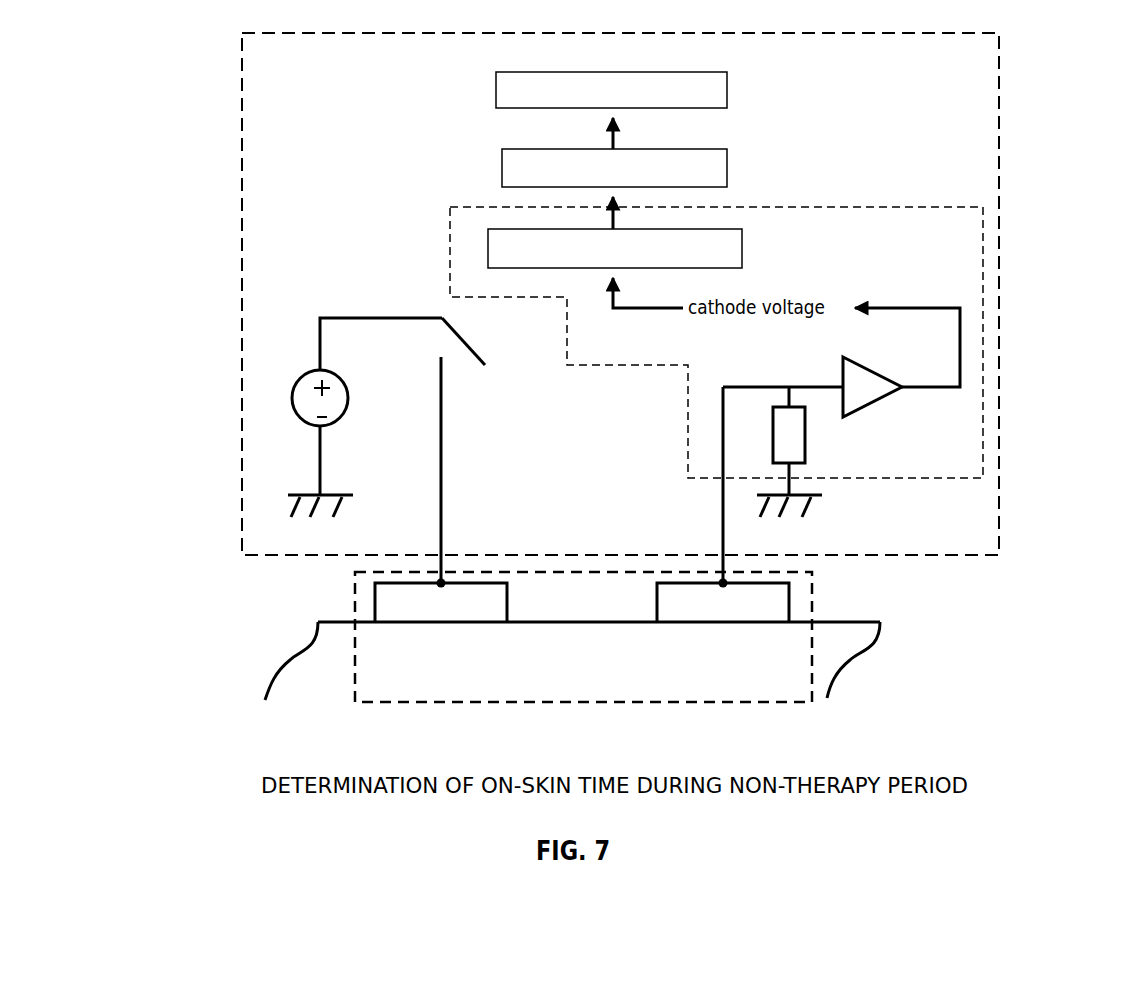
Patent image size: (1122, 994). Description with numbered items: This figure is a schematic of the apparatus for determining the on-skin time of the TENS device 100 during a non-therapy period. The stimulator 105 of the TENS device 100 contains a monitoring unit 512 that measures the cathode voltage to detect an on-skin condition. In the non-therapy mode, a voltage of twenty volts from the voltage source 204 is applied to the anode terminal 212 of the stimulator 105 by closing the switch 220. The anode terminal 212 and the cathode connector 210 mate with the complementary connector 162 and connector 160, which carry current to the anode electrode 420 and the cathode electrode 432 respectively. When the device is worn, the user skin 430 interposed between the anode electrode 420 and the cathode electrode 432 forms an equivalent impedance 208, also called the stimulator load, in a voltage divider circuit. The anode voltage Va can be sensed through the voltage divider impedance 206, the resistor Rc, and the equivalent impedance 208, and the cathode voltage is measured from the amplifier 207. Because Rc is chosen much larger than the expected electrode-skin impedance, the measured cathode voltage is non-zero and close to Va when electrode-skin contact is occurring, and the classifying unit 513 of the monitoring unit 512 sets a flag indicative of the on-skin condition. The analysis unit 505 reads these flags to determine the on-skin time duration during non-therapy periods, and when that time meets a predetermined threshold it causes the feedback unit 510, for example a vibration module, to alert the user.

The TENS device 100 is at (150, 120).
The stimulator 105 is at (999, 555).
The feedback unit 510 is at (727, 90).
The analysis unit 505 is at (727, 165).
The classifying unit 513 is at (742, 247).
The monitoring unit 512 is at (983, 275).
The voltage source 204 is at (308, 397).
The switch 220 is at (460, 363).
The anode terminal 212 is at (497, 520).
The cathode connector 210 is at (652, 518).
The amplifier 207 is at (868, 392).
The voltage divider impedance Rc 206 is at (792, 445).
The equivalent impedance 208 is at (813, 662).
The user skin 430 is at (572, 661).
The anode electrode 420 is at (388, 603).
The cathode electrode 432 is at (763, 602).
The connector 162 is at (438, 587).
The connector 160 is at (721, 587).